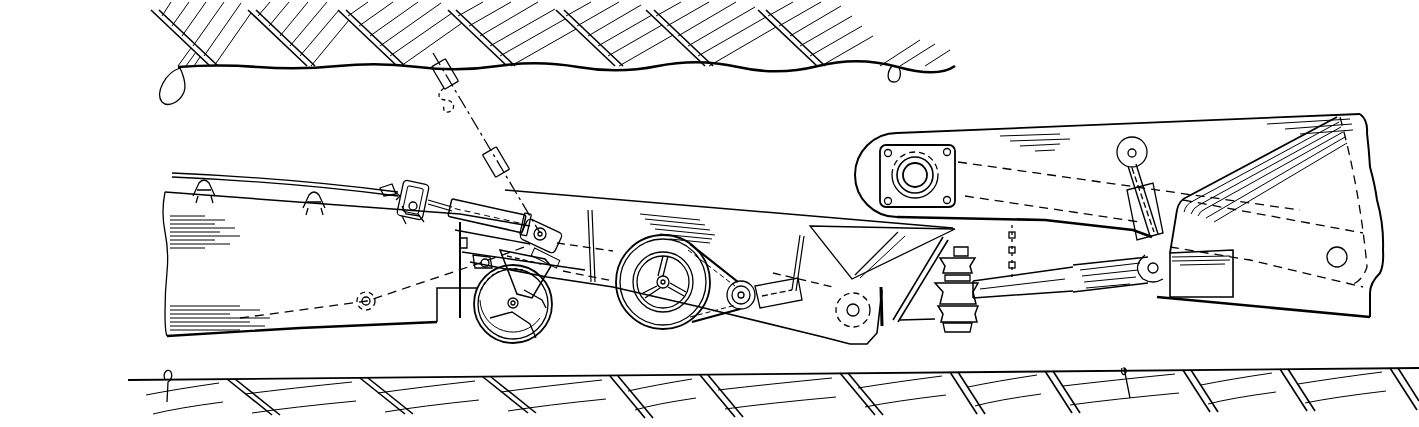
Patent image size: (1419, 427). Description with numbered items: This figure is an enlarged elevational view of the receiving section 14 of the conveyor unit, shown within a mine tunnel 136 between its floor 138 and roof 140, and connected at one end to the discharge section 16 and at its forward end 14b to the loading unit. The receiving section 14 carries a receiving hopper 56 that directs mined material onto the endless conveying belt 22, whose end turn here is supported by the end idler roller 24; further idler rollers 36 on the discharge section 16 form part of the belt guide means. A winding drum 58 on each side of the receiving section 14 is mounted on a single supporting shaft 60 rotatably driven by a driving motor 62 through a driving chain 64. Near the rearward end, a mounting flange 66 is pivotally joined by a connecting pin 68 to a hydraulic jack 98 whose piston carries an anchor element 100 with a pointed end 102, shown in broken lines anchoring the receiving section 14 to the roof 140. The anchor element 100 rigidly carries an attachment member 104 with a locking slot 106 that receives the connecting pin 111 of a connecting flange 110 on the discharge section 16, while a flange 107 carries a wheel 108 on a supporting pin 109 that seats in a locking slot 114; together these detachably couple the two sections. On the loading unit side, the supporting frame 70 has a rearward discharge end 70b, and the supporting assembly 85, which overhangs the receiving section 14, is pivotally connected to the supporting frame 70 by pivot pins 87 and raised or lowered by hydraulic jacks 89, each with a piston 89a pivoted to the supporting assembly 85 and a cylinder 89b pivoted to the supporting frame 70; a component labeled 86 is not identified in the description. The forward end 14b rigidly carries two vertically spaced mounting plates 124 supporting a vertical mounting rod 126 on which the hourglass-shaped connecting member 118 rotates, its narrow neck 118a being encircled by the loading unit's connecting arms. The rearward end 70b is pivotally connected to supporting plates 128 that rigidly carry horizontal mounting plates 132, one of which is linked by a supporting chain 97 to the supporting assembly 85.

The receiving section 14 is at (612, 148).
The forward end of receiving section 14b is at (502, 185).
The discharge section 16 is at (553, 52).
The endless conveying belt 22 is at (260, 176).
The end idler roller 24 is at (853, 326).
The idler rollers 36 is at (205, 178).
The receiving hopper 56 is at (810, 225).
The winding drum 58 is at (660, 245).
The supporting shaft 60 is at (665, 290).
The driving motor 62 is at (748, 310).
The driving chain 64 is at (708, 318).
The mounting flange 66 is at (546, 226).
The connecting pin 68 is at (548, 226).
The supporting frame 70 is at (1349, 114).
The rearward or discharge end of supporting frame 70b is at (1258, 297).
The supporting assembly 85 is at (1029, 122).
The bearing plate 86 is at (915, 170).
The pivot pins 87 is at (1337, 267).
The hydraulic jacks or motors 89 is at (1141, 130).
The piston 89a is at (1148, 172).
The cylinder 89b is at (1150, 193).
The supporting chain 97 is at (1018, 250).
The hydraulic jack or motor 98 is at (470, 207).
The anchor element 100 is at (396, 190).
The pointed or anchor end 102 is at (382, 186).
The connecting or attachment member 104 is at (424, 222).
The locking slot 106 is at (402, 229).
The flange 107 is at (548, 300).
The wheel 108 is at (514, 330).
The supporting pin 109 is at (535, 331).
The connecting flanges 110 is at (422, 190).
The connecting pin 111 is at (403, 220).
The locking slot 114 is at (540, 322).
The connecting member or element 118 is at (983, 300).
The narrow neck 118a is at (915, 306).
The mounting plates 124 is at (972, 262).
The mounting rod or element 126 is at (958, 334).
The supporting plates 128 is at (1112, 280).
The mounting plates 132 is at (1058, 290).
The mine tunnel 136 is at (160, 168).
The floor 138 is at (773, 397).
The roof 140 is at (160, 74).